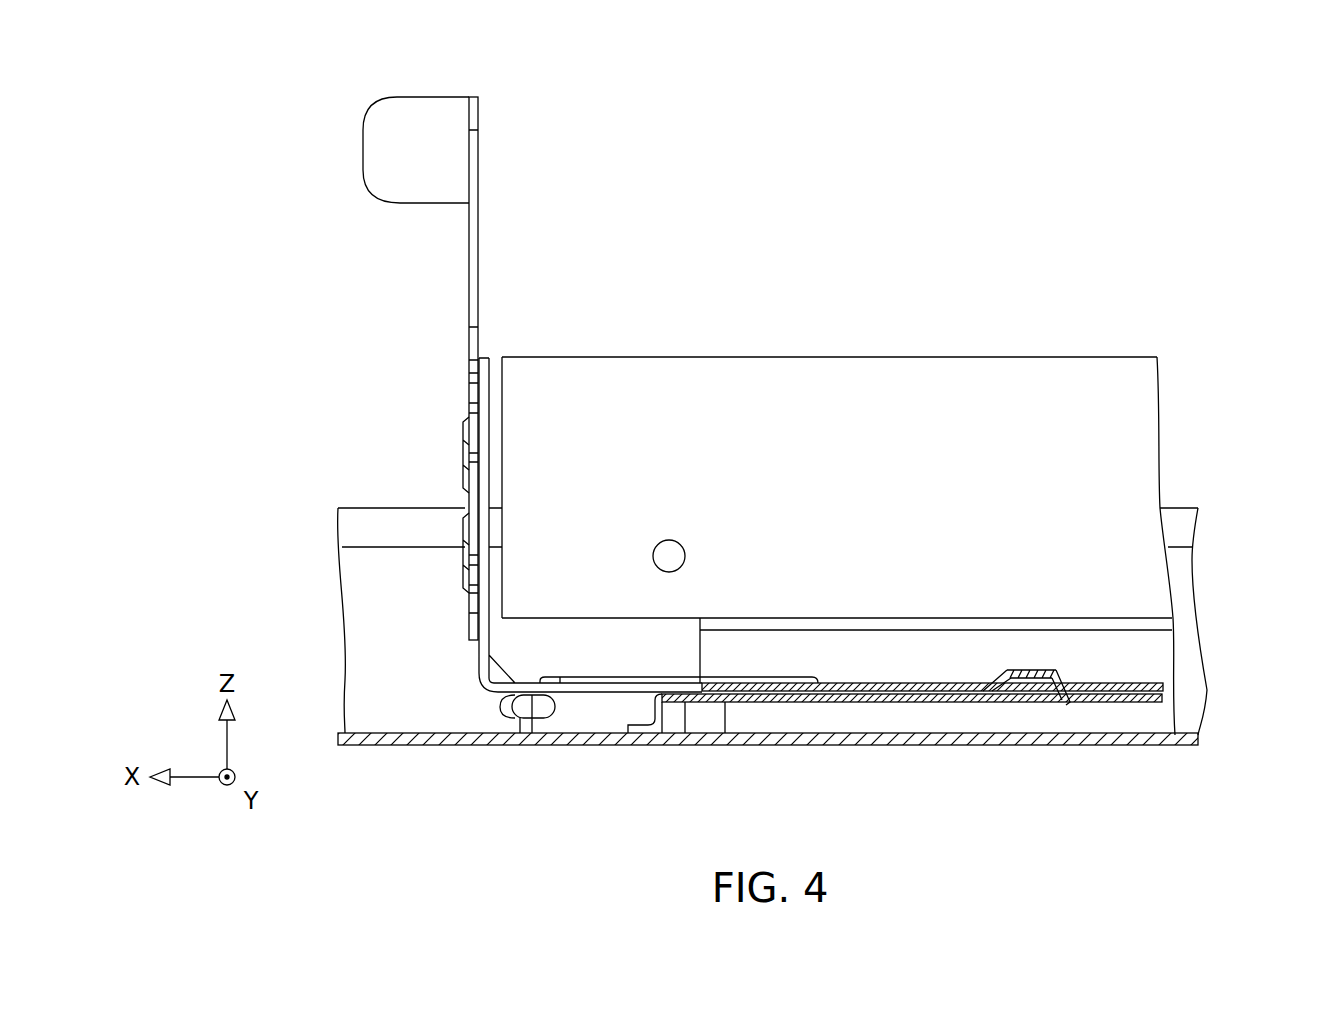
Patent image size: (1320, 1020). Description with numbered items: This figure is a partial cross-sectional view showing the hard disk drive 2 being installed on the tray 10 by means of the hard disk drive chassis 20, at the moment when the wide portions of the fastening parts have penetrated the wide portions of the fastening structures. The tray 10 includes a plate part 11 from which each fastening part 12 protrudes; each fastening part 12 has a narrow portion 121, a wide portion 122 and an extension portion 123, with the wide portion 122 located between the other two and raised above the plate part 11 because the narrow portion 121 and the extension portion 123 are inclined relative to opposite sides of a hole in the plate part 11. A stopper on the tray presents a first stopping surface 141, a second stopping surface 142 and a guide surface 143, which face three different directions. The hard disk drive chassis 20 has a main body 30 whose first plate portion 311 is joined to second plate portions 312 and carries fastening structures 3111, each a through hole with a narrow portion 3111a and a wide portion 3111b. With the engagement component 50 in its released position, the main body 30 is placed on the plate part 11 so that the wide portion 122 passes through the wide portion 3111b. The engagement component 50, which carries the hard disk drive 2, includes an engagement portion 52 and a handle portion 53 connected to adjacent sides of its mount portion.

The hard disk drive 2 is at (1015, 388).
The tray 10 is at (360, 495).
The plate part 11 is at (622, 713).
The fastening part 12 is at (1041, 684).
The narrow portion 121 is at (1000, 677).
The wide portion 122 is at (1038, 672).
The extension portion 123 is at (1050, 706).
The first stopping surface 141 is at (535, 708).
The second stopping surface 142 is at (558, 705).
The guide surface 143 is at (515, 718).
The hard disk drive chassis 20 is at (446, 583).
The main body 30 is at (954, 730).
The first plate portion 311 is at (991, 741).
The fastening structure 3111 is at (954, 764).
The narrow portion 3111a is at (950, 693).
The wide portion 3111b is at (866, 808).
The second plate portion 312 is at (1135, 652).
The engagement component 50 is at (532, 353).
The engagement portion 52 is at (470, 470).
The handle portion 53 is at (475, 268).